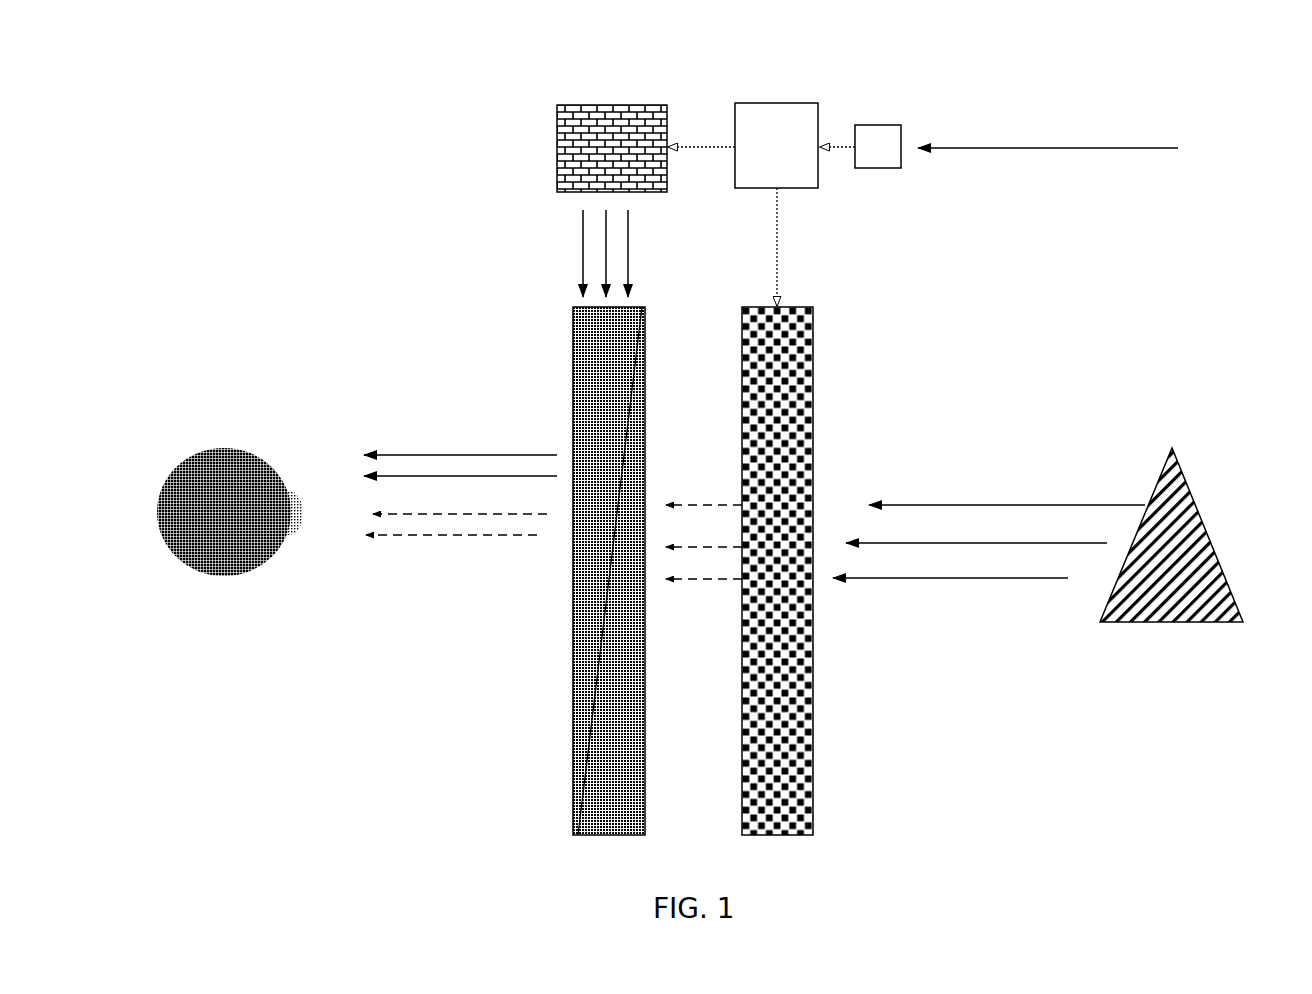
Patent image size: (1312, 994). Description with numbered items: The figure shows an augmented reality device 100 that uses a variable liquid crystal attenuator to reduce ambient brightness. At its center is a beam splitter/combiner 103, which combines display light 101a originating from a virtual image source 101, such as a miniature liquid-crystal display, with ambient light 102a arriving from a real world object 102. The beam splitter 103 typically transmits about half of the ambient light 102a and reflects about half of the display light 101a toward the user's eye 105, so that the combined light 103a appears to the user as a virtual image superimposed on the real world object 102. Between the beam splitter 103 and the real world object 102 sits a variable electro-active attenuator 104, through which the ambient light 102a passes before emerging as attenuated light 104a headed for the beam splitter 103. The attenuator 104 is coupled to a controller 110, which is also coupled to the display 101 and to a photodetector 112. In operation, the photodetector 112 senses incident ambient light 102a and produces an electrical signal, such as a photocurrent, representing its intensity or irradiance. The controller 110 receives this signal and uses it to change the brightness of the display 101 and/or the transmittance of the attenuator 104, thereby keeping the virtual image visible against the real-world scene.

The augmented reality device 100 is at (347, 253).
The virtual image source 101 is at (557, 153).
The display light 101a is at (644, 253).
The real world object 102 is at (1207, 532).
The ambient light 102a is at (1005, 363).
The beam splitter/combiner 103 is at (582, 622).
The combined light 103a is at (460, 515).
The variable electro-active attenuator 104 is at (815, 813).
The attenuated ambient light 104a is at (704, 524).
The user's eye 105 is at (183, 473).
The controller 110 is at (778, 103).
The photodetector 112 is at (878, 125).